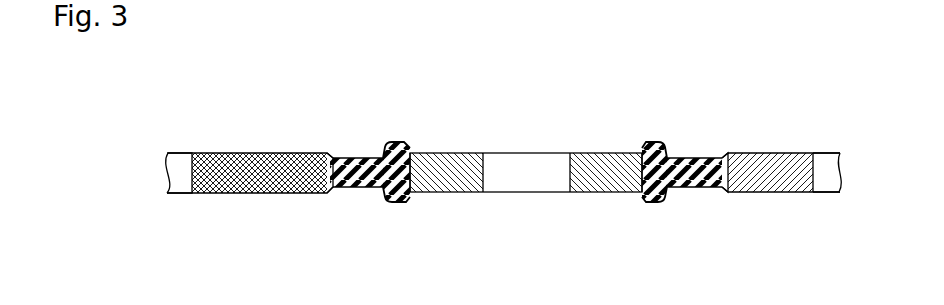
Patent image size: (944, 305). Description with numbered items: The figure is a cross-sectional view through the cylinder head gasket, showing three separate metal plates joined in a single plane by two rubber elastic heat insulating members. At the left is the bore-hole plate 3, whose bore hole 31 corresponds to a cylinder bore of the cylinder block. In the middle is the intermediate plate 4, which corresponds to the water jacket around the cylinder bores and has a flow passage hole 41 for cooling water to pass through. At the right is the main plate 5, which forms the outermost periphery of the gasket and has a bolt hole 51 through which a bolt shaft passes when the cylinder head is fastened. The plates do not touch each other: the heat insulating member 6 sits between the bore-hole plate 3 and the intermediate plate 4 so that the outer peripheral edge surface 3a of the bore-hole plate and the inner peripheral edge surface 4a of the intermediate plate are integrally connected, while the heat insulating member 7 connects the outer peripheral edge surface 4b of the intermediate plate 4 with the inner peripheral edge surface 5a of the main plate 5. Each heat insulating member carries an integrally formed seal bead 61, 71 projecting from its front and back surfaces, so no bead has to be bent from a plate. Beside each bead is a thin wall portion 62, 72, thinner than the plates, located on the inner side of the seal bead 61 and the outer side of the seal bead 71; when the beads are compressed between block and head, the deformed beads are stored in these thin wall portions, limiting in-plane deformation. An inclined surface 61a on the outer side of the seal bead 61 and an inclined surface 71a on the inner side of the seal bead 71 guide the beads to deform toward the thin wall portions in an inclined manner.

The bore-hole plate 3 is at (249, 171).
The bore hole 31 is at (183, 194).
The outer peripheral edge surface 3a is at (333, 191).
The heat insulating member 6 is at (381, 158).
The thin wall portion 62 is at (357, 188).
The seal bead 61 is at (404, 185).
The inclined surface 61a is at (395, 141).
The intermediate plate 4 is at (526, 173).
The flow passage hole 41 is at (525, 193).
The inner peripheral edge surface 4a is at (405, 202).
The outer peripheral edge surface 4b is at (648, 201).
The heat insulating member 7 is at (665, 155).
The thin wall portion 72 is at (700, 188).
The seal bead 71 is at (639, 183).
The inclined surface 71a is at (654, 141).
The main plate 5 is at (781, 172).
The inner peripheral edge surface 5a is at (721, 190).
The bolt hole 51 is at (823, 194).